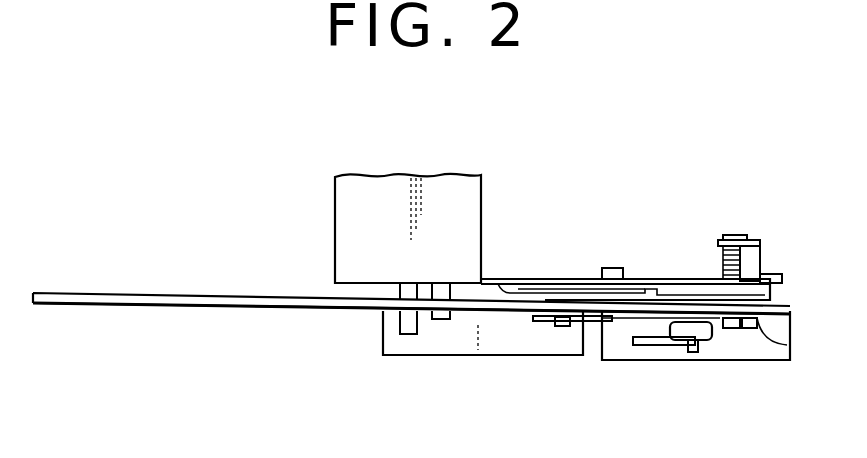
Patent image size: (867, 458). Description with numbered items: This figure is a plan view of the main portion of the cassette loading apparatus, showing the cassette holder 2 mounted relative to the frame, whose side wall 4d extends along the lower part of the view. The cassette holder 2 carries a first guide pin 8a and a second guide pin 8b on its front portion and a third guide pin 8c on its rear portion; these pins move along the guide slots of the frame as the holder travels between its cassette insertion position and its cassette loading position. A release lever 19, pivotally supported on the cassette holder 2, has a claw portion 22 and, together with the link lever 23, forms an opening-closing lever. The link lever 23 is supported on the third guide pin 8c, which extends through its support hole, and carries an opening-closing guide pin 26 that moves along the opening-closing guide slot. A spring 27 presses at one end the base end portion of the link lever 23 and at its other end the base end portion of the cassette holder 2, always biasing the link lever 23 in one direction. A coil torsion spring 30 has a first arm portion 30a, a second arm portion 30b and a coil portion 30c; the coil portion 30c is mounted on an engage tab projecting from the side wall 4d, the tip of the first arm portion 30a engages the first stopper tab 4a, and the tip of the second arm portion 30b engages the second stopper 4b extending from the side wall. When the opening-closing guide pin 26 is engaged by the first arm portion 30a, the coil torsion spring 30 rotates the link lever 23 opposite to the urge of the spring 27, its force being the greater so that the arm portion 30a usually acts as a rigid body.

The cassette holder 2 is at (476, 194).
The first stopper tab 4a is at (560, 326).
The second stopper 4b is at (763, 362).
The side wall 4d is at (245, 306).
The first guide pin 8a is at (400, 325).
The second guide pin 8b is at (437, 320).
The third guide pin 8c is at (727, 329).
The release lever 19 is at (499, 282).
The claw portion 22 is at (608, 268).
The link lever 23 is at (688, 342).
The opening-closing guide pin 26 is at (762, 346).
The spring 27 is at (725, 270).
The coil torsion spring 30 is at (613, 318).
The first arm portion 30a is at (533, 318).
The second arm portion 30b is at (642, 345).
The coil portion 30c is at (702, 340).